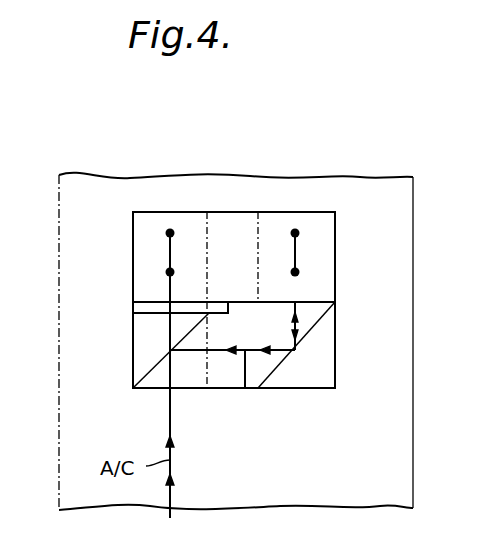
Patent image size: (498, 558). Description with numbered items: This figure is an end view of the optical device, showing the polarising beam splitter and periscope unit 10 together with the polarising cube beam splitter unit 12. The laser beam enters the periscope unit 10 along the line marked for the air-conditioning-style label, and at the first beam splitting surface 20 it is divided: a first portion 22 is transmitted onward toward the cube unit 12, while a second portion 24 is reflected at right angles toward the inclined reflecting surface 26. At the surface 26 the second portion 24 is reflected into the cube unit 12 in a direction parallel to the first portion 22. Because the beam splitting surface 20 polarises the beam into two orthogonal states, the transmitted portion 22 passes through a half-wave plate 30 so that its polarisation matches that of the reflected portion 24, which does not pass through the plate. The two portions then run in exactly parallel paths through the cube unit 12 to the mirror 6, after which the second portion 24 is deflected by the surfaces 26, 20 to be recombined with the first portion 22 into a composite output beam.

The mirror 6 is at (286, 178).
The polarising beam splitter and periscope unit 10 is at (325, 388).
The polarising cube beam splitter unit 12 is at (336, 251).
The first beam splitting surface 20 is at (133, 370).
The first portion of the beam 22 is at (170, 328).
The second portion of the beam 24 is at (245, 388).
The inclined reflecting surface 26 is at (318, 323).
The half-wave plate 30 is at (133, 303).